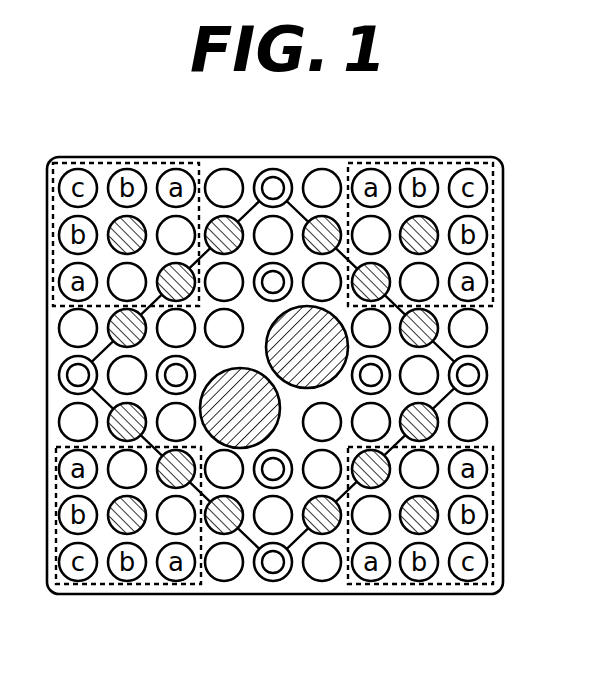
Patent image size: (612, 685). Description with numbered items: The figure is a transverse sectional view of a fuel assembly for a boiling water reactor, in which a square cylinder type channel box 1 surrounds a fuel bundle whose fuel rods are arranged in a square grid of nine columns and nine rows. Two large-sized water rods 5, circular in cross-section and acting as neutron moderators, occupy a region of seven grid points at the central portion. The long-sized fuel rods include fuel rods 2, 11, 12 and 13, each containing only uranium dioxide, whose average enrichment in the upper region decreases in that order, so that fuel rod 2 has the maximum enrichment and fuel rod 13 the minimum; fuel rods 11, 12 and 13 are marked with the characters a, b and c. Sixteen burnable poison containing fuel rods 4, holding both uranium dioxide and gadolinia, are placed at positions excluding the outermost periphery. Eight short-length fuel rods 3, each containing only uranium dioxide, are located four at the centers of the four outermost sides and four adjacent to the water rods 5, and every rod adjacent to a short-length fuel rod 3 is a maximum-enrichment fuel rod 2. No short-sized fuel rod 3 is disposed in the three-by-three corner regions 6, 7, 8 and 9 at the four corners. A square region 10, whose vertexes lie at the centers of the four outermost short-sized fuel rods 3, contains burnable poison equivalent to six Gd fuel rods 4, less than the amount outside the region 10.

The channel box 1 is at (187, 158).
The fuel rod 2 is at (471, 329).
The short-length fuel rod 3 is at (471, 377).
The burnable poison containing fuel rod 4 is at (430, 424).
The large-sized water rod 5 is at (238, 437).
The 3×3 corner region 6 is at (107, 162).
The 3×3 corner region 7 is at (381, 584).
The 3×3 corner region 8 is at (408, 160).
The 3×3 corner region 9 is at (170, 584).
The region 10 is at (288, 257).
The fuel rod 11 is at (471, 268).
The fuel rod 12 is at (471, 222).
The fuel rod 13 is at (471, 174).